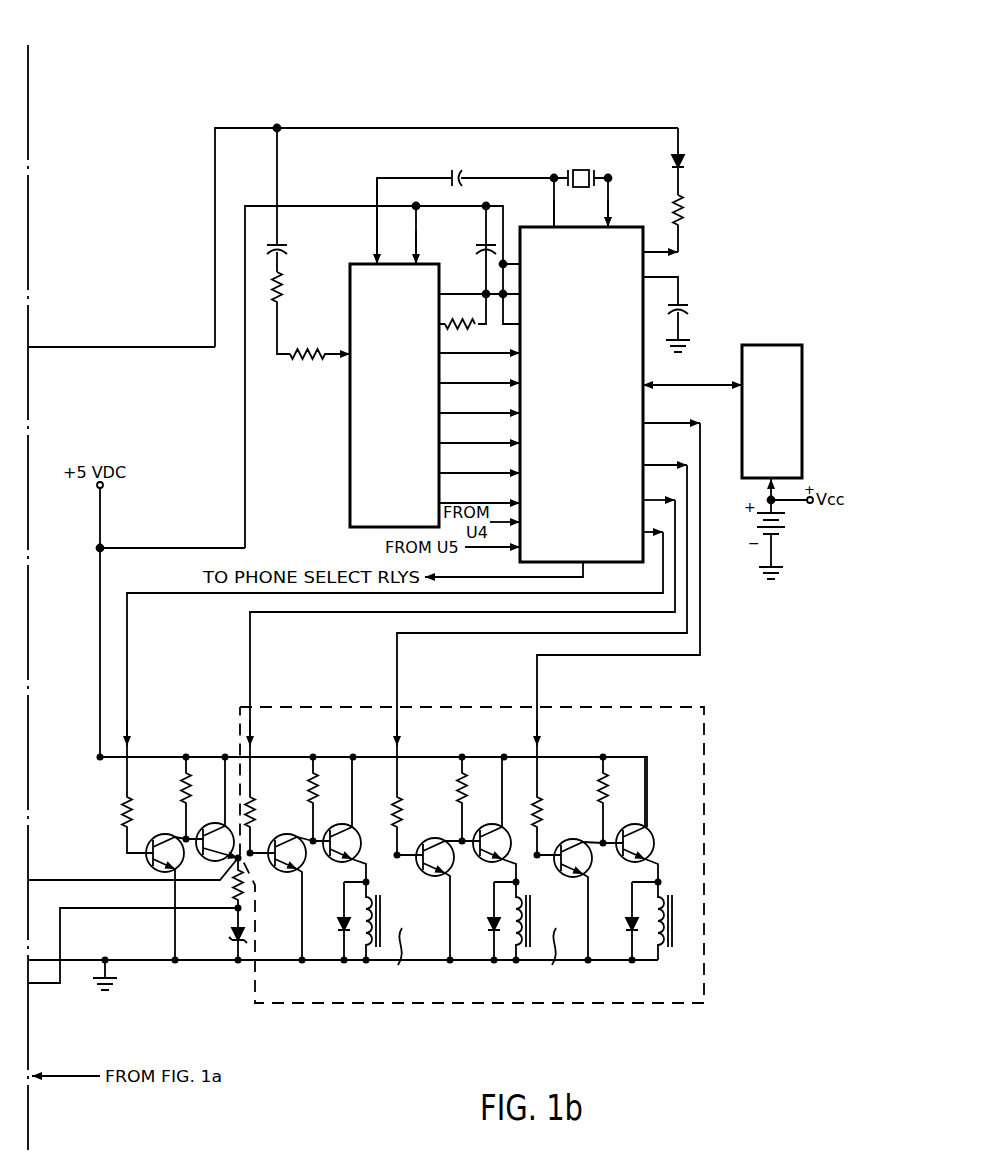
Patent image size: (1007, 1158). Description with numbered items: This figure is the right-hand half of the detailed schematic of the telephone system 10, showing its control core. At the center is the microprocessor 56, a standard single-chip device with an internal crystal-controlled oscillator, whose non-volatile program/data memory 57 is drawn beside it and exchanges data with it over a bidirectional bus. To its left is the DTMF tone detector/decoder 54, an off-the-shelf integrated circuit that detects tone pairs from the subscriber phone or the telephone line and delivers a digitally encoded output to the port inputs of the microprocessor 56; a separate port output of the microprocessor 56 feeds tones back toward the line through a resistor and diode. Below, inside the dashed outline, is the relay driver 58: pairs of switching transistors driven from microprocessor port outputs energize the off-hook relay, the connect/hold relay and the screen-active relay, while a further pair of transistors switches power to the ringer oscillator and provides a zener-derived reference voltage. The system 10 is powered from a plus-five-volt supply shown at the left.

The telephone system 10 is at (383, 60).
The DTMF tone detector/decoder 54 is at (350, 500).
The microprocessor 56 is at (628, 234).
The non-volatile memory 57 is at (802, 450).
The relay driver 58 is at (623, 717).